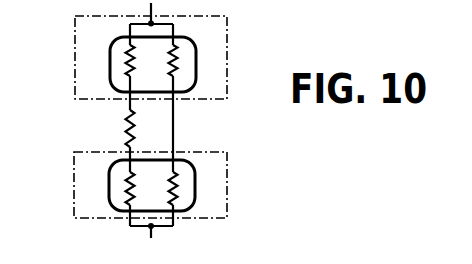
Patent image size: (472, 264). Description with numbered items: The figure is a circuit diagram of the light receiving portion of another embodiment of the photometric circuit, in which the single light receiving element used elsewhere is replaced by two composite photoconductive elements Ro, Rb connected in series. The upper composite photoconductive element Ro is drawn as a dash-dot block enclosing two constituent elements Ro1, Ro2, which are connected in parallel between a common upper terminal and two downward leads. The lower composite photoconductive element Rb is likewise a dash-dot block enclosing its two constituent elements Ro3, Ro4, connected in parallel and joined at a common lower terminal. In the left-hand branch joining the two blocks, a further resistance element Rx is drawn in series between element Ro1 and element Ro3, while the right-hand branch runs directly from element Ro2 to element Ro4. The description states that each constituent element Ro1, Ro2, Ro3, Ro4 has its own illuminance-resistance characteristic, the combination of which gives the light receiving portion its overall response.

The composite photoconductive element Ro is at (246, 13).
The photoconductive element Ro1 is at (127, 59).
The photoconductive element Ro2 is at (178, 67).
The resistor Rx is at (128, 128).
The composite photoconductive element Rb is at (185, 151).
The photoconductive element Ro3 is at (127, 184).
The photoconductive element Ro4 is at (178, 187).